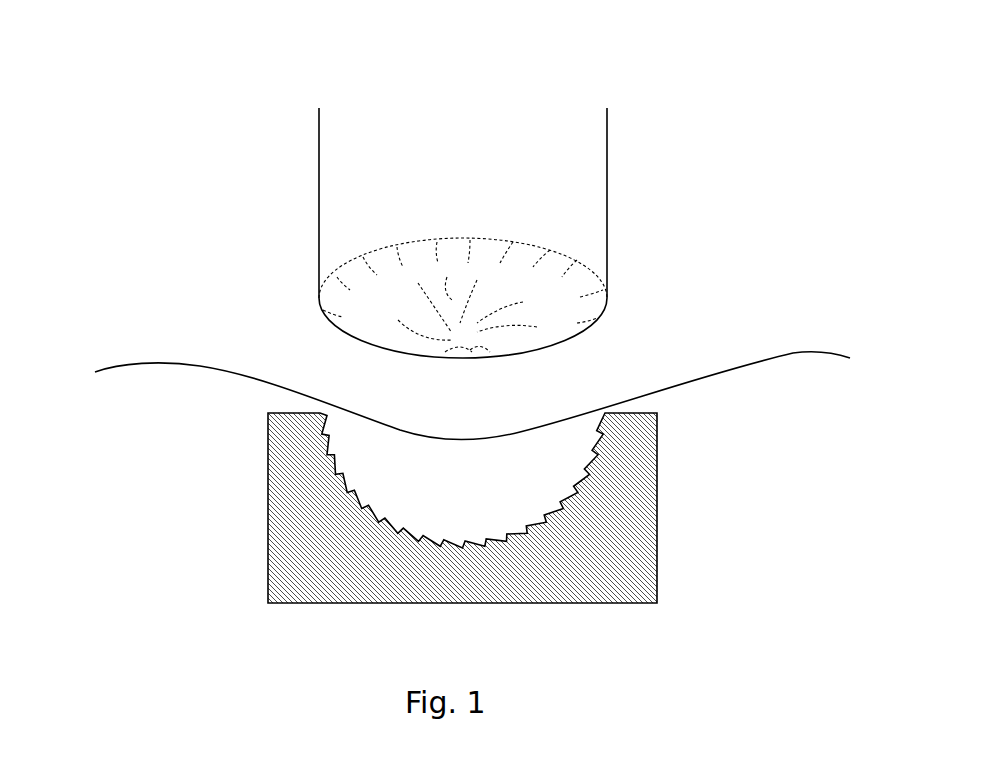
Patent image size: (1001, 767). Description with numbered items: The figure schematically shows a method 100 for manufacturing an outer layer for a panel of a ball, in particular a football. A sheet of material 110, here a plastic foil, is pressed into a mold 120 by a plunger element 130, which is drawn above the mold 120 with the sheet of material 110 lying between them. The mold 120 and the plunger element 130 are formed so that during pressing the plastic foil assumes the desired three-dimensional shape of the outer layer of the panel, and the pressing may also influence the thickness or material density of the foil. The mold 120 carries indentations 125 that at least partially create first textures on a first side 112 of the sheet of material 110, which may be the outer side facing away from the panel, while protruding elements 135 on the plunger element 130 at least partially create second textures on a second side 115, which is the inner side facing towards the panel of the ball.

The method 100 is at (163, 48).
The sheet of material 110 is at (127, 365).
The first side 112 is at (813, 363).
The second side 115 is at (778, 343).
The mold 120 is at (310, 563).
The indentations 125 is at (520, 537).
The plunger element 130 is at (555, 178).
The protruding elements 135 is at (428, 255).